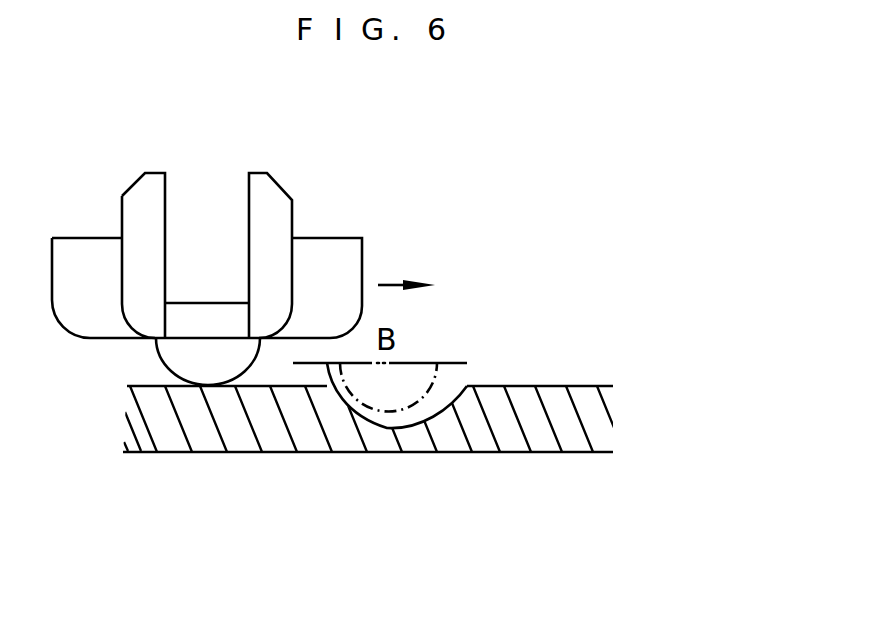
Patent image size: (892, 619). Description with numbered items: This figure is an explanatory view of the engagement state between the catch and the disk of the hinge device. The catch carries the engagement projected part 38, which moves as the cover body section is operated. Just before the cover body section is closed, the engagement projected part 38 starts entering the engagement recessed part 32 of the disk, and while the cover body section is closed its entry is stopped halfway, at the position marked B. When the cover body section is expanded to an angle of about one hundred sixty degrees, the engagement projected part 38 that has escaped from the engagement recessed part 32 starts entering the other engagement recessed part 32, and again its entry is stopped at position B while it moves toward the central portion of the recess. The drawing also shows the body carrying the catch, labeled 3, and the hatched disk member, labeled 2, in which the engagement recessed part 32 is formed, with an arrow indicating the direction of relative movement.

The mounting head 3 is at (275, 178).
The engagement projected part 38 is at (163, 357).
The engagement recessed part 32 is at (433, 409).
The substrate 2 is at (537, 453).